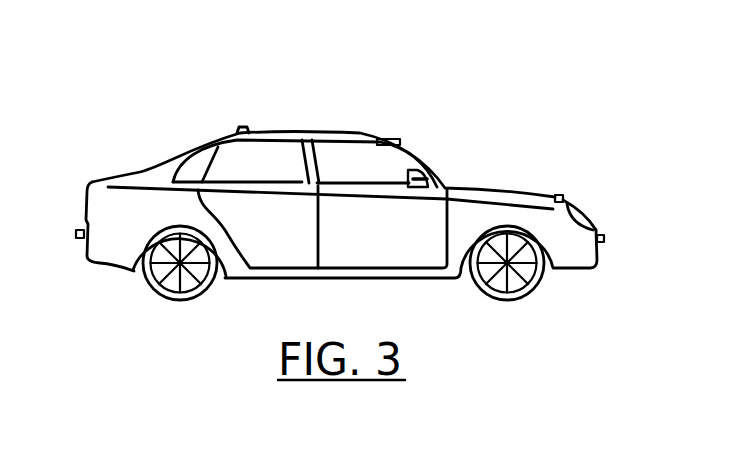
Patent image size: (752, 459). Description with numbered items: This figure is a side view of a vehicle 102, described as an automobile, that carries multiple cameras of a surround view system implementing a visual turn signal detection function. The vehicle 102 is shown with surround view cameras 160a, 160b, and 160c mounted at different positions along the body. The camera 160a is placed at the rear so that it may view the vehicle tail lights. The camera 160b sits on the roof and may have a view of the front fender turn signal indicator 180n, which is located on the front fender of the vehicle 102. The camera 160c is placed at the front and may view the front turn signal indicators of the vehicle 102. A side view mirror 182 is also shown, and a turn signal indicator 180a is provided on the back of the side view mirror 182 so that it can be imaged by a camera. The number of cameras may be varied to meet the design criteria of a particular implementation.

The vehicle 102 is at (175, 43).
The surround view camera 160a is at (75, 237).
The surround view camera 160b is at (390, 141).
The surround view camera 160c is at (603, 237).
The turn signal indicator 180a is at (415, 187).
The front fender turn signal indicator 180n is at (563, 195).
The side view mirror 182 is at (409, 174).